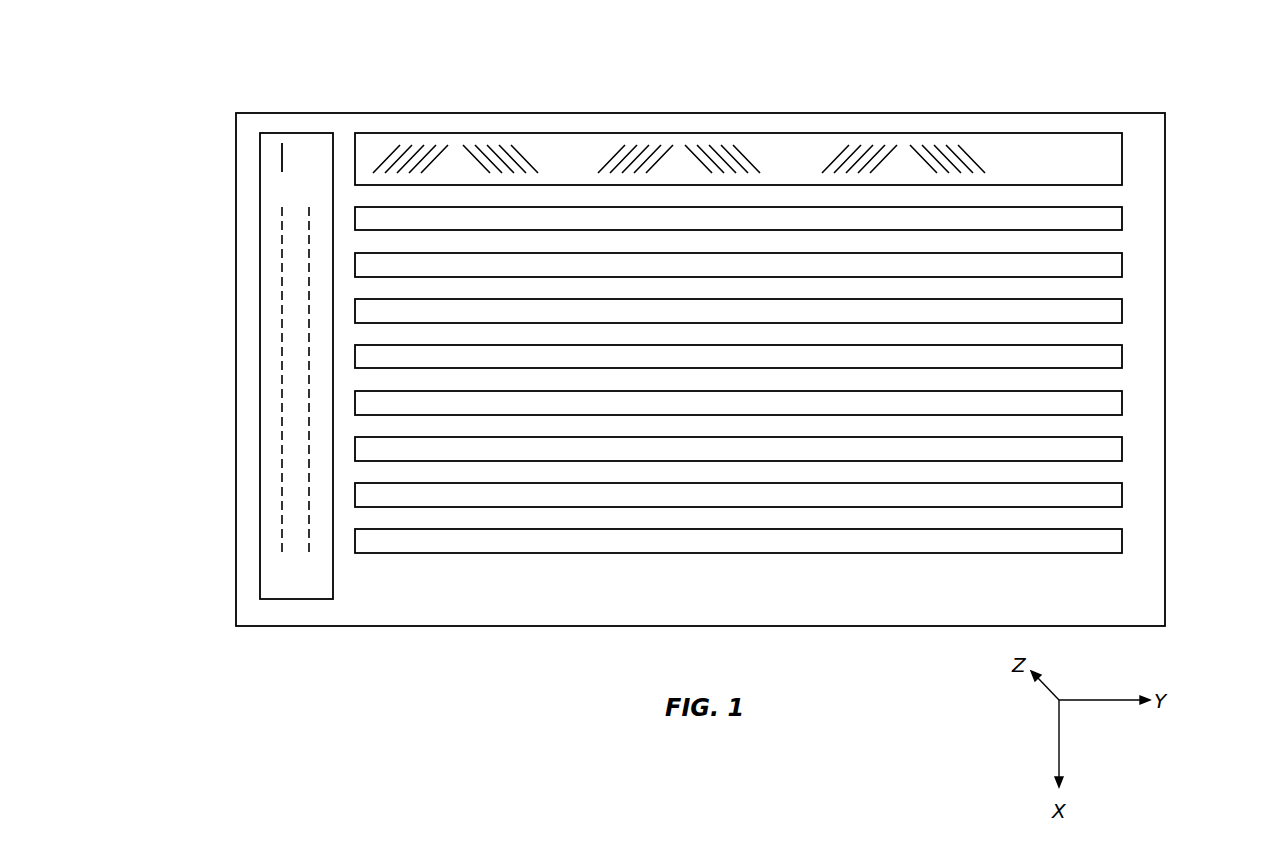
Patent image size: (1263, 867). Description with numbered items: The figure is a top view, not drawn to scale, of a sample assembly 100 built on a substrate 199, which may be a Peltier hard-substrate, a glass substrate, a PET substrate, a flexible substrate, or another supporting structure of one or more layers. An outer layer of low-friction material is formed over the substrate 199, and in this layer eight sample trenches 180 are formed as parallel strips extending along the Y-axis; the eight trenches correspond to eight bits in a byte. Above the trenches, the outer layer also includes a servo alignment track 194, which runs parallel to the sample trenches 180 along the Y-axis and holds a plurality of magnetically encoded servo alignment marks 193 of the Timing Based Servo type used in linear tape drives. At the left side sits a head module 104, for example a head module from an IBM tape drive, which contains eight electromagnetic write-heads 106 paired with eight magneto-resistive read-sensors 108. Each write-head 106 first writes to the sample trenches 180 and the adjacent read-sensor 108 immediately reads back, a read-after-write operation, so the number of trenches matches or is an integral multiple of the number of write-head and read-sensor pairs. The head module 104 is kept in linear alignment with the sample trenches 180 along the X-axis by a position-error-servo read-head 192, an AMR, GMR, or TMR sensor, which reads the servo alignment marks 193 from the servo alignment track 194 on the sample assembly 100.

The sample assembly 100 is at (1008, 76).
The head module 104 is at (283, 587).
The electromagnetic write-head 106 is at (309, 249).
The magneto-resistive read-sensor 108 is at (282, 229).
The sample trenches 180 is at (1122, 265).
The position-error-servo (PES) read-head 192 is at (282, 155).
The servo alignment marks 193 is at (523, 160).
The servo alignment track 194 is at (604, 134).
The substrate 199 is at (389, 612).